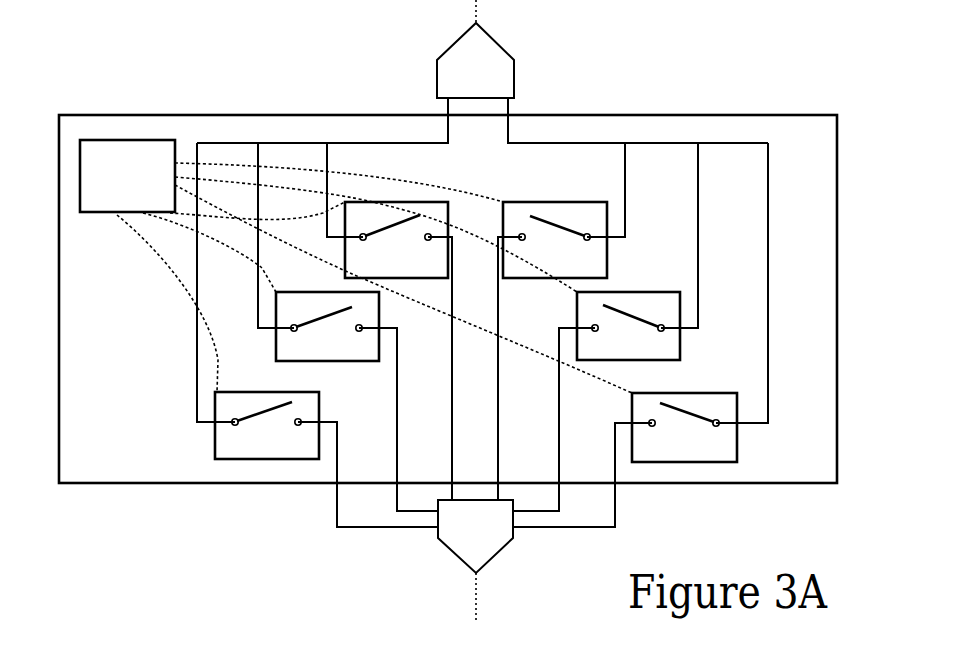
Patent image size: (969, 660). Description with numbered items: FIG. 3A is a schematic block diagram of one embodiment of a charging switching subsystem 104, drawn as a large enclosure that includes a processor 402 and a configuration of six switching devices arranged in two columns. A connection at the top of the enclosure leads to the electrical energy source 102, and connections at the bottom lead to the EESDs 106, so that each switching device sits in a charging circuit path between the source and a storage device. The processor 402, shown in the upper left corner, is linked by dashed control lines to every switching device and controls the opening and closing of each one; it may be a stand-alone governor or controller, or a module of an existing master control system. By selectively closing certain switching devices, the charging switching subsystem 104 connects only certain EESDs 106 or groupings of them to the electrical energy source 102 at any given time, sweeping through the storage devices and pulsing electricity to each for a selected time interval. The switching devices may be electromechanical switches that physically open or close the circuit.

The electrical energy source 102 is at (475, 49).
The charging switching subsystem 104 is at (818, 144).
The EESD 106 is at (475, 561).
The processor 402 is at (106, 186).